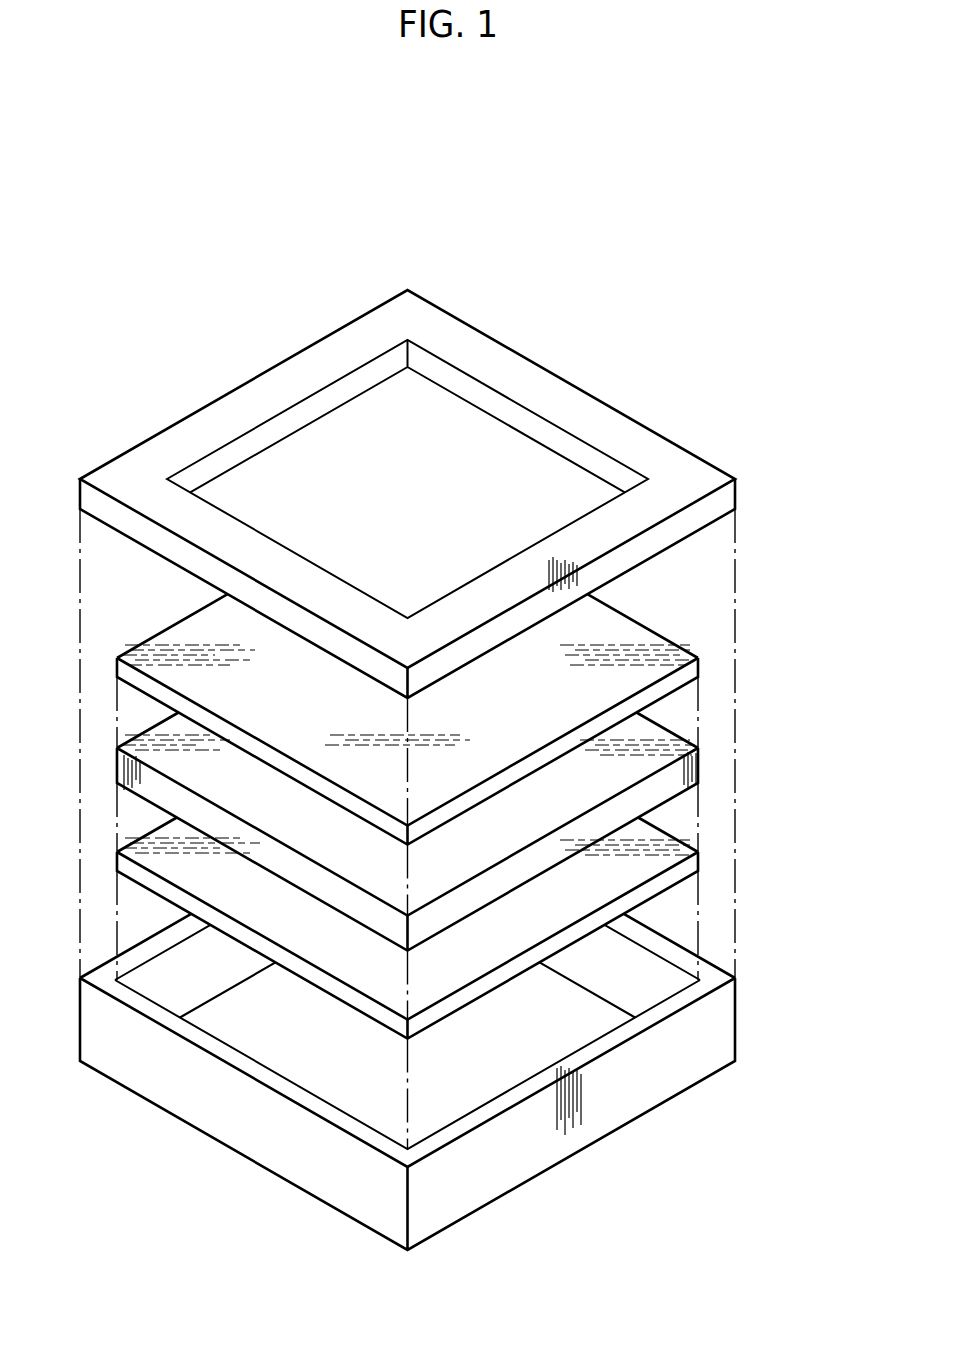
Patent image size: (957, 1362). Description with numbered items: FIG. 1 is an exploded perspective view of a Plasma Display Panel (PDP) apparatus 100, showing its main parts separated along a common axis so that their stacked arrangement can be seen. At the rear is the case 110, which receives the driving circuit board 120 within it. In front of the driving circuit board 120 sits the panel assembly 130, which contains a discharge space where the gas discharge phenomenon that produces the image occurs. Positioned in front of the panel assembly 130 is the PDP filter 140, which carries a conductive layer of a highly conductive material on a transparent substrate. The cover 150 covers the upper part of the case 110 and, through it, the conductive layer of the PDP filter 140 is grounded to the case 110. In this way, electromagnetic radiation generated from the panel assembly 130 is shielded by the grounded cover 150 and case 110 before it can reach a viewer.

The PDP apparatus 100 is at (574, 339).
The case 110 is at (727, 1022).
The driving circuit board 120 is at (698, 858).
The panel assembly 130 is at (698, 768).
The PDP filter 140 is at (698, 665).
The cover 150 is at (727, 497).